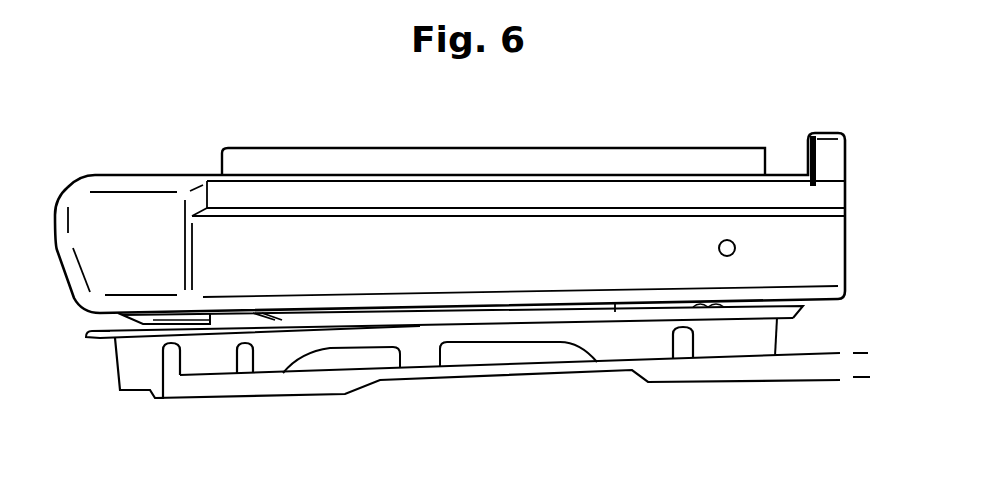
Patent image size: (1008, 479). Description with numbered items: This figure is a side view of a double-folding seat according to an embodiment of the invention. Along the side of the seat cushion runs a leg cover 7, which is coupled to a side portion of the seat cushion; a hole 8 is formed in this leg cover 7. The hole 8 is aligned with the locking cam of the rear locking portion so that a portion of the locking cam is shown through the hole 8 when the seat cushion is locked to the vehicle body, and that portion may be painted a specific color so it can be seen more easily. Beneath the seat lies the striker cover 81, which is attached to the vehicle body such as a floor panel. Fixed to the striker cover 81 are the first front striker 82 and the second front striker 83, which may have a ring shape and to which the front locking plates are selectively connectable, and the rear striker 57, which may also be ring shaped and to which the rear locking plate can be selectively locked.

The leg cover 7 is at (623, 227).
The hole 8 is at (735, 246).
The striker cover 81 is at (343, 392).
The first front striker 82 is at (165, 358).
The second front striker 83 is at (245, 365).
The rear striker 57 is at (683, 352).